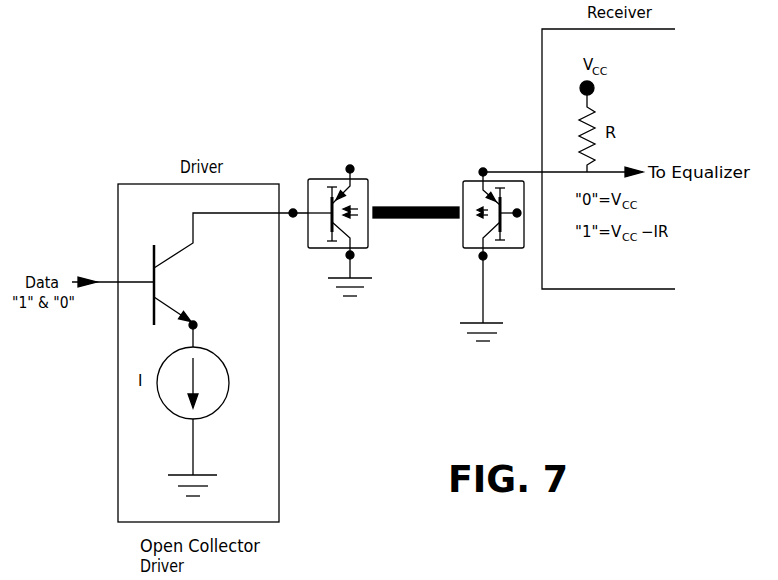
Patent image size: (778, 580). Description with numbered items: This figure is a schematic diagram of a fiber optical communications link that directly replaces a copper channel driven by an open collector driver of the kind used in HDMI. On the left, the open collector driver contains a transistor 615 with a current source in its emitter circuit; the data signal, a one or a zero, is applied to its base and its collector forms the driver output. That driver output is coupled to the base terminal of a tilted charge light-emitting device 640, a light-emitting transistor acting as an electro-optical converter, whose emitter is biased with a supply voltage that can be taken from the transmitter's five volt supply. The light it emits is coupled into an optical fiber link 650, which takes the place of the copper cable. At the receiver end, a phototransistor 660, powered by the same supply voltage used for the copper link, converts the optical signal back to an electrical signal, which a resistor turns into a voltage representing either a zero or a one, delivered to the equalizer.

The transistor 615 is at (153, 258).
The tilted charge light-emitting device 640 is at (308, 190).
The optical fiber link 650 is at (413, 220).
The phototransistor 660 is at (460, 187).